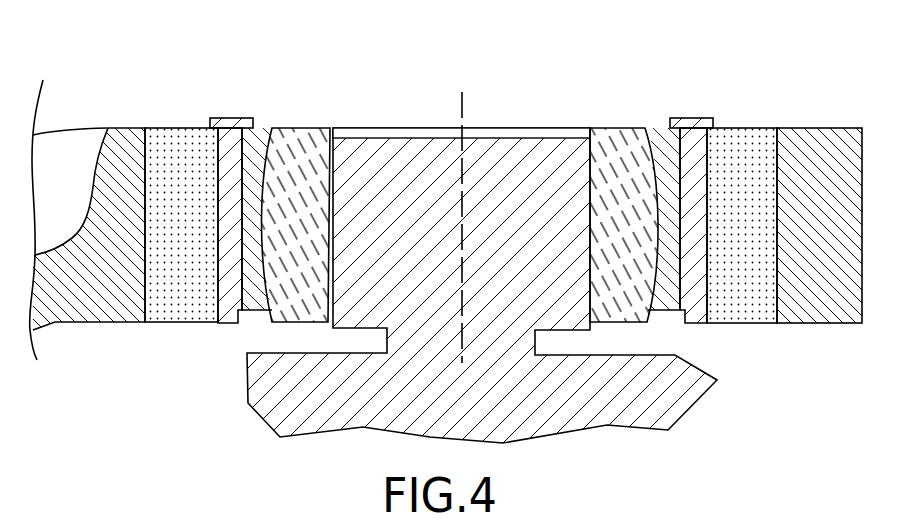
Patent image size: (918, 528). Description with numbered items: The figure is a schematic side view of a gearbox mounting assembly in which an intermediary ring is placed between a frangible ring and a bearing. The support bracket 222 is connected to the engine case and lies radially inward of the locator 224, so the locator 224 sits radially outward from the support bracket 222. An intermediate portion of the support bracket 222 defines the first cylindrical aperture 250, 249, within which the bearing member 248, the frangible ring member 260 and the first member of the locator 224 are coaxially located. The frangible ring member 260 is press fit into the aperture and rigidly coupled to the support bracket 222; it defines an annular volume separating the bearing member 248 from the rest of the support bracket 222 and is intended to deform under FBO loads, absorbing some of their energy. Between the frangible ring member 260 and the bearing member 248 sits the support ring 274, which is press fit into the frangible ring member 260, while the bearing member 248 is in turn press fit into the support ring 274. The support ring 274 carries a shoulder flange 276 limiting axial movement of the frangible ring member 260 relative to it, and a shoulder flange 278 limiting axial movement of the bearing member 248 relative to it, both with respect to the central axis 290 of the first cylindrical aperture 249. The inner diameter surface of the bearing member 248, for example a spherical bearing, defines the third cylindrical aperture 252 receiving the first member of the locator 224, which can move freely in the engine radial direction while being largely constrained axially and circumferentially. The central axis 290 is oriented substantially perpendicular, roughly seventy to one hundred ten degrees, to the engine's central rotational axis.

The support bracket 222 is at (122, 128).
The frangible ring member 260 is at (178, 128).
The support ring 274 is at (233, 118).
The shoulder flange 276 is at (211, 119).
The shoulder flange 278 is at (252, 119).
The bearing member 248 is at (282, 133).
The locator 224 is at (373, 148).
The central axis 290 is at (463, 100).
The third cylindrical aperture 252 is at (590, 175).
The first cylindrical aperture 250 is at (705, 173).
The first cylindrical aperture 249 is at (777, 173).